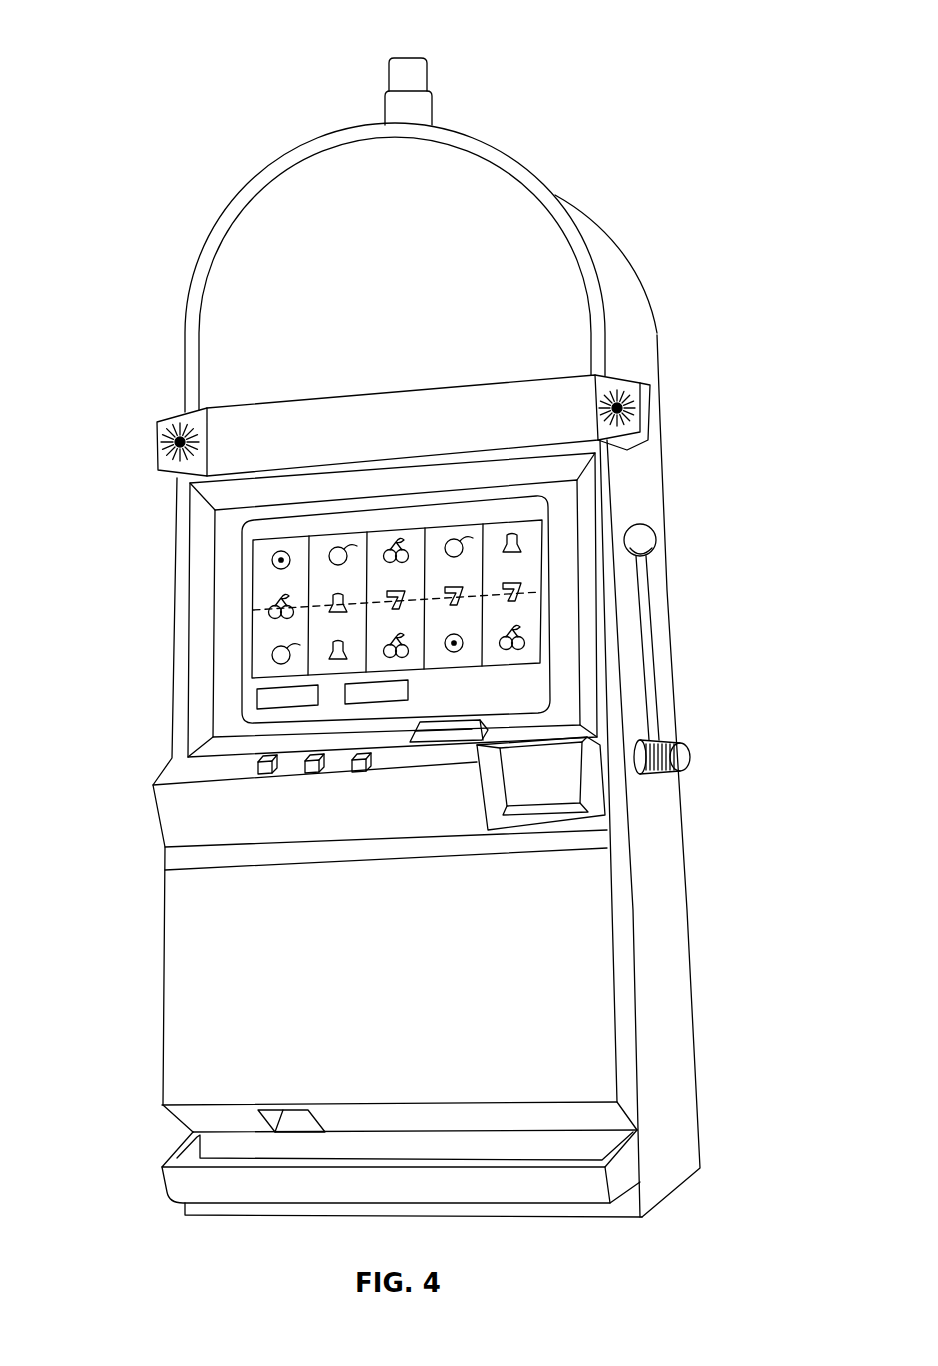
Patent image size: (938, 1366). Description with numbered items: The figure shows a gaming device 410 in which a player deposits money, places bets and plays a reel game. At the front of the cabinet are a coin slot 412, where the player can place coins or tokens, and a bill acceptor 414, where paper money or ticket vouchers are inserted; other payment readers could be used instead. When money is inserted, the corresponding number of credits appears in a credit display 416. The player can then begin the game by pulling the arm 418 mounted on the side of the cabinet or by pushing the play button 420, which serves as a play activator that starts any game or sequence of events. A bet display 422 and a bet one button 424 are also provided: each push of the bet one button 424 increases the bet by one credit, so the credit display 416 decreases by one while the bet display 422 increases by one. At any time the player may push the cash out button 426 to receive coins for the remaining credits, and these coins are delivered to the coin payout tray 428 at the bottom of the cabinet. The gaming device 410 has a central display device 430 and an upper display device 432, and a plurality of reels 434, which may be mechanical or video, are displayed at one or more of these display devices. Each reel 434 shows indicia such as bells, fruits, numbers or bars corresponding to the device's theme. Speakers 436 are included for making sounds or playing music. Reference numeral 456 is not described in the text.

The gaming device 410 is at (125, 45).
The coin slot 412 is at (448, 715).
The bill acceptor 414 is at (570, 805).
The credit display 416 is at (280, 692).
The arm 418 is at (648, 530).
The play button 420 is at (265, 776).
The bet display 422 is at (375, 690).
The bet one button 424 is at (313, 775).
The cash out button 426 is at (362, 774).
The coin payout tray 428 is at (248, 1142).
The central display device 430 is at (252, 527).
The upper display device 432 is at (540, 205).
The reels 434 is at (500, 528).
The speakers 436 is at (162, 442).
The display window 456 is at (313, 597).